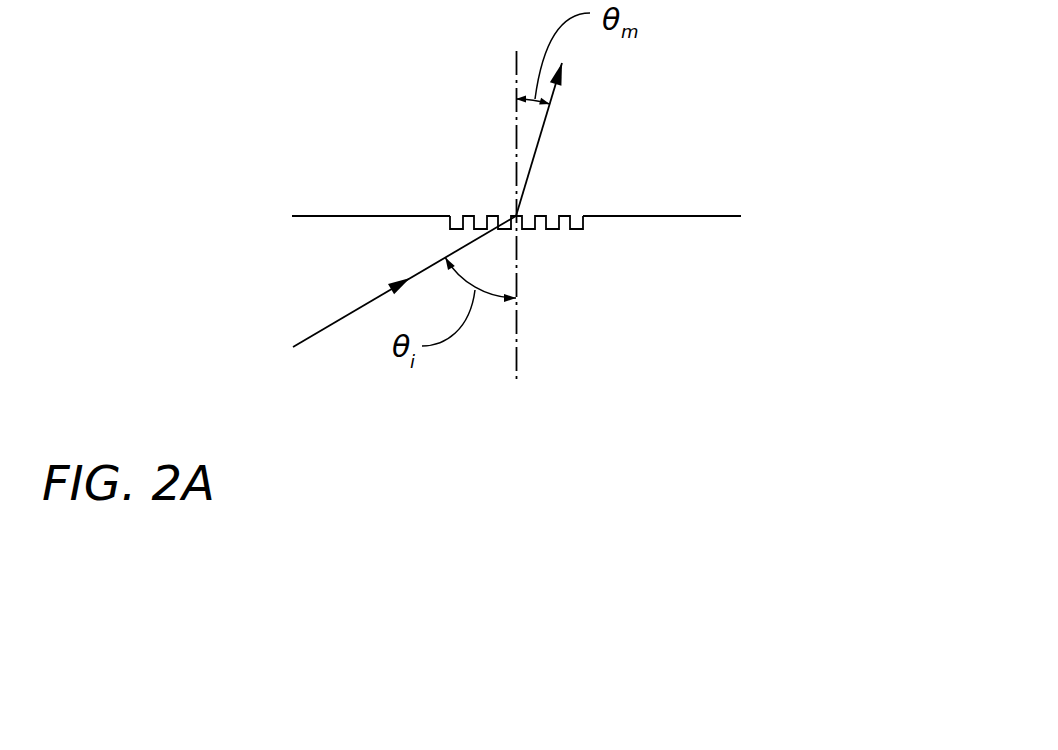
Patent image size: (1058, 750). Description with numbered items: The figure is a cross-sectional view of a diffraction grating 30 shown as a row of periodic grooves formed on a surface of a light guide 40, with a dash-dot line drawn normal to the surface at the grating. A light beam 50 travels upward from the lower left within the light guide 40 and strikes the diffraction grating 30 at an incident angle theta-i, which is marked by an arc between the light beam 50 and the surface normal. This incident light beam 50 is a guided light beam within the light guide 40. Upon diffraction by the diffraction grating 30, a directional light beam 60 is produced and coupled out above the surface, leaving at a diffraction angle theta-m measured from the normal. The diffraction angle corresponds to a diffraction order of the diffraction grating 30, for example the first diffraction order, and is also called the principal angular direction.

The diffraction grating 30 is at (447, 193).
The light guide 40 is at (663, 303).
The light beam 50 is at (362, 305).
The directional light beam 60 is at (541, 138).